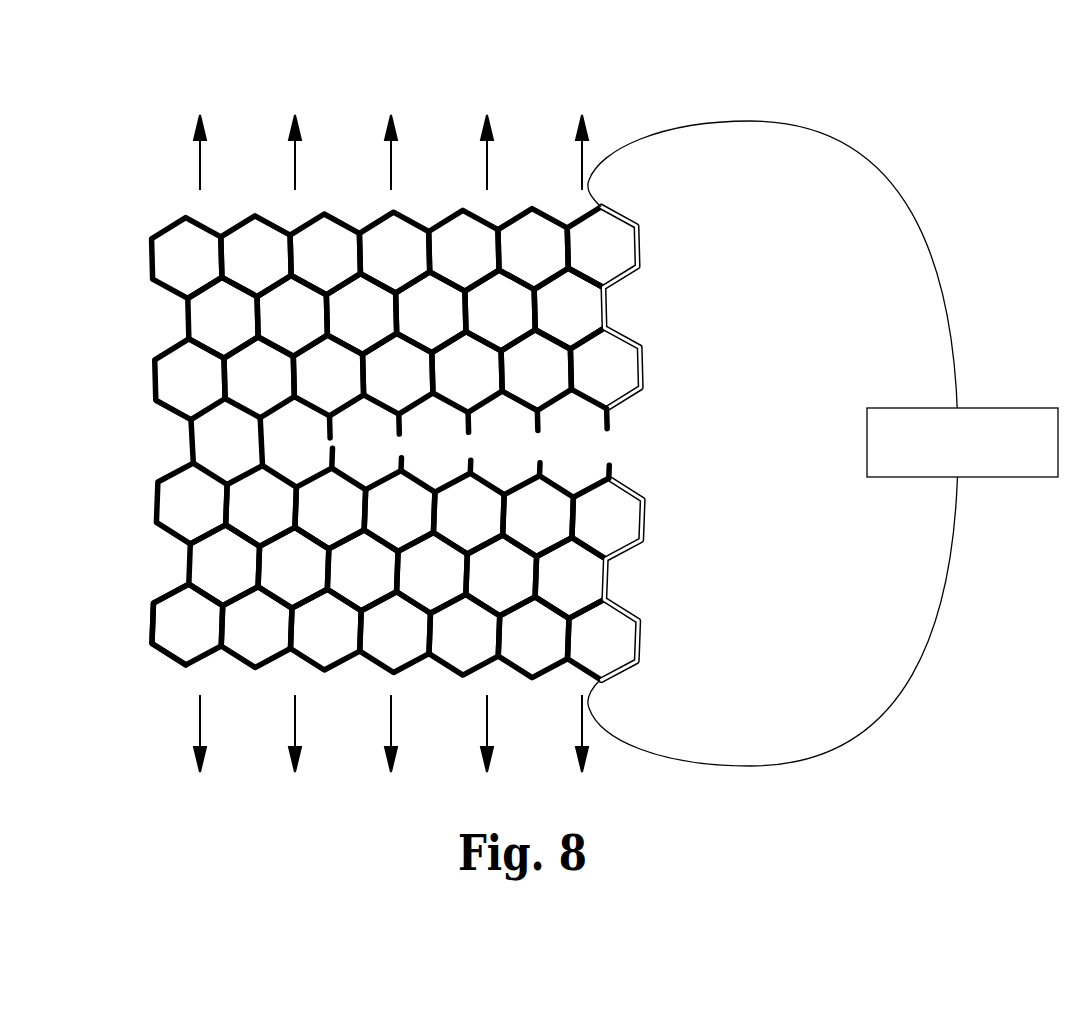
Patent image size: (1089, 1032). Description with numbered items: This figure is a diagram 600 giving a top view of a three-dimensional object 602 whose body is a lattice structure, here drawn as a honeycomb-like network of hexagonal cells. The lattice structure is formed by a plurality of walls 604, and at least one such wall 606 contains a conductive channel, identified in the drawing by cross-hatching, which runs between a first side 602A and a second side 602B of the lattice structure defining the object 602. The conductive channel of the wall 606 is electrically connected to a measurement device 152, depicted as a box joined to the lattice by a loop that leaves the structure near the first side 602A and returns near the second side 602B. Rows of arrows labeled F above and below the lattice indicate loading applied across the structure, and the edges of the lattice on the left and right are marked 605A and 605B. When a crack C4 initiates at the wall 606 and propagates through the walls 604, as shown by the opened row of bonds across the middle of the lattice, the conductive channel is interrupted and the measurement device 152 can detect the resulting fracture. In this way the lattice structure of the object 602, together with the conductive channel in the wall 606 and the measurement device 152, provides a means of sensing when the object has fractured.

The diagram 600 is at (97, 91).
The 3D object 602 is at (150, 350).
The first side 602A is at (186, 258).
The second side 602B is at (187, 624).
The walls 604 is at (265, 445).
The first edge of graphene sheet 605A is at (170, 624).
The second edge of graphene sheet 605B is at (622, 579).
The wall comprising a conductive channel 606 is at (621, 307).
The crack C4 is at (640, 440).
The measurement device 152 is at (1025, 408).
The applied force F is at (391, 446).